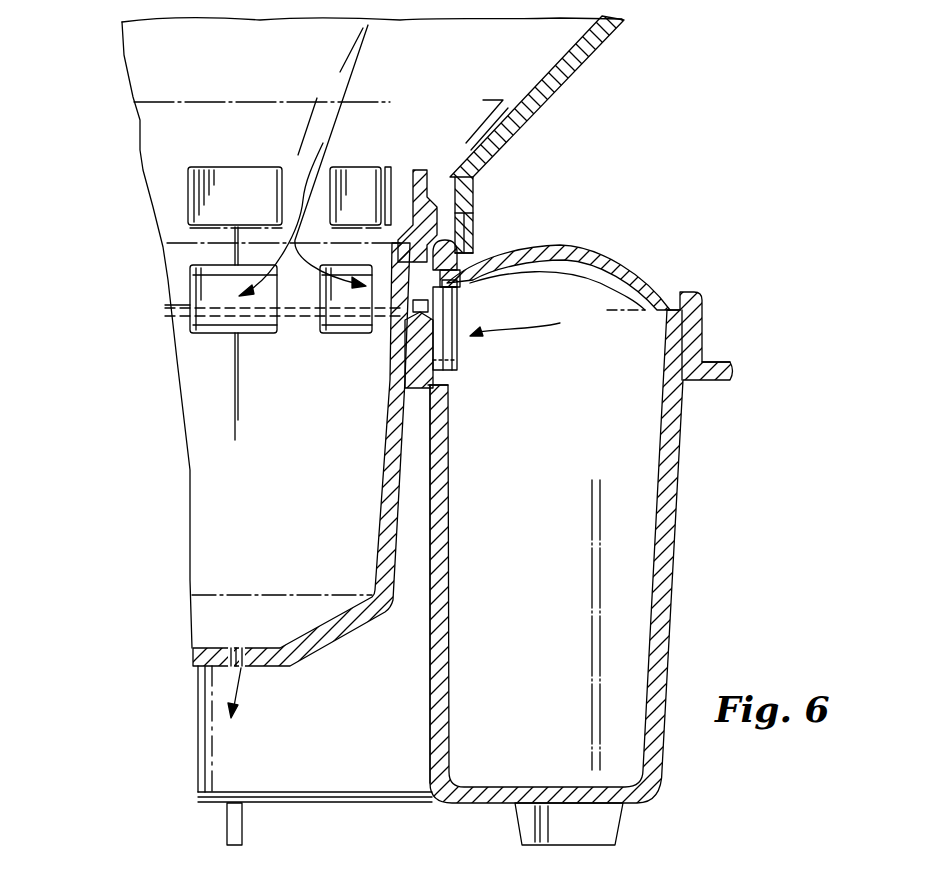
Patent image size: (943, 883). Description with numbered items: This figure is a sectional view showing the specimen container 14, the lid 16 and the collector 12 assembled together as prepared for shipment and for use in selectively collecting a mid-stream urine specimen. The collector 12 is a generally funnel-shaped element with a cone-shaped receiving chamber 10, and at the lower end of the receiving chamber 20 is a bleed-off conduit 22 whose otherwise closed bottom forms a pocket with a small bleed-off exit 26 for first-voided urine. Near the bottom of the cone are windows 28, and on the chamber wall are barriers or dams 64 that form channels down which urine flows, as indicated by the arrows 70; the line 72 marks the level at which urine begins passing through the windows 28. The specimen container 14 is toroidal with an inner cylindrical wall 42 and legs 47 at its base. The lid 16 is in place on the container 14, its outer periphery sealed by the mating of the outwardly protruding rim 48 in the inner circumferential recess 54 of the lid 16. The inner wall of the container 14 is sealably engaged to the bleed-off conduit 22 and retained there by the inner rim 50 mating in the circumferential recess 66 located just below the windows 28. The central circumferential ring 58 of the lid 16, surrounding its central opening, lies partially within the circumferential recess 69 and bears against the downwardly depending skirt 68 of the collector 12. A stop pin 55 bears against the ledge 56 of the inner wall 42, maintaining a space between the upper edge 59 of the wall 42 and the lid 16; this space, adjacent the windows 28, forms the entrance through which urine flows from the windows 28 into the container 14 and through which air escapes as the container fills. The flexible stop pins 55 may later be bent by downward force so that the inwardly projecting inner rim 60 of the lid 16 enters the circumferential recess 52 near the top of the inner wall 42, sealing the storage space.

The cone-shaped receiving chamber 10 is at (848, 76).
The collector 12 is at (605, 49).
The specimen container 14 is at (674, 543).
The lid 16 is at (638, 270).
The receiving chamber 20 is at (541, 70).
The bleed-off conduit 22 is at (380, 553).
The bleed-off exit 26 is at (243, 667).
The windows 28 is at (227, 300).
The inner cylindrical wall 42 is at (455, 580).
The legs 47 is at (242, 832).
The rim 48 is at (680, 325).
The inner rim 50 is at (423, 390).
The circumferential recess 52 is at (460, 348).
The inner circumferential recess 54 is at (683, 337).
The stop pins 55 is at (460, 360).
The ledge 56 is at (447, 375).
The ring 58 is at (437, 193).
The upper edge 59 is at (460, 300).
The inner rim 60 is at (460, 283).
The barriers or dams 64 is at (228, 167).
The circumferential recess 66 is at (405, 355).
The skirt 68 is at (473, 233).
The circumferential recess 69 is at (467, 217).
The arrows 70 is at (416, 180).
The line 72 is at (178, 305).